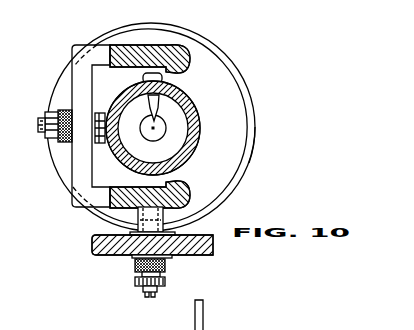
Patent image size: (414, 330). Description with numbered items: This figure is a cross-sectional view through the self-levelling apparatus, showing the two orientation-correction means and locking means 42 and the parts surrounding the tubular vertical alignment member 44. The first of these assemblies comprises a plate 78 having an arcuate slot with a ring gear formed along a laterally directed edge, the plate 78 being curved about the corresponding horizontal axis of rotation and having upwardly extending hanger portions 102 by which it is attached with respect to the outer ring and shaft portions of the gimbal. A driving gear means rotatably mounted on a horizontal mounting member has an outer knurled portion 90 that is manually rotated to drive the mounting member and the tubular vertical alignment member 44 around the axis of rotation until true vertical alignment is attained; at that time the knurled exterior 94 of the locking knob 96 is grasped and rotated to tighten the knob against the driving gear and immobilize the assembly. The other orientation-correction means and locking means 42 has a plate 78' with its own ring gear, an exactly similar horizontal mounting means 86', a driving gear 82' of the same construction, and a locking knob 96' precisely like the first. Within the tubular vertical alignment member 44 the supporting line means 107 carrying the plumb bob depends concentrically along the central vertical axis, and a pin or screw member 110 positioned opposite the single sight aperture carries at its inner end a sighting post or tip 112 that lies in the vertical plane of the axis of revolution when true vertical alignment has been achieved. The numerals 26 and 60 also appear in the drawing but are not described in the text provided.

The support post 26 is at (204, 322).
The orientation-correction means and locking means 42 is at (60, 101).
The tubular vertical alignment member 44 is at (254, 163).
The base 60 is at (170, 329).
The plate 78 is at (66, 126).
The plate 78' is at (124, 245).
The driving gear 82' is at (188, 277).
The horizontal mounting means 86' is at (200, 236).
The outer knurled portion 90 is at (66, 150).
The knurled exterior 94 is at (47, 140).
The locking knob 96 is at (35, 113).
The locking knob 96' is at (132, 300).
The hanger portions 102 is at (199, 33).
The supporting line means 107 is at (205, 141).
The pin or screw member 110 is at (186, 74).
The sighting post or tip 112 is at (166, 126).